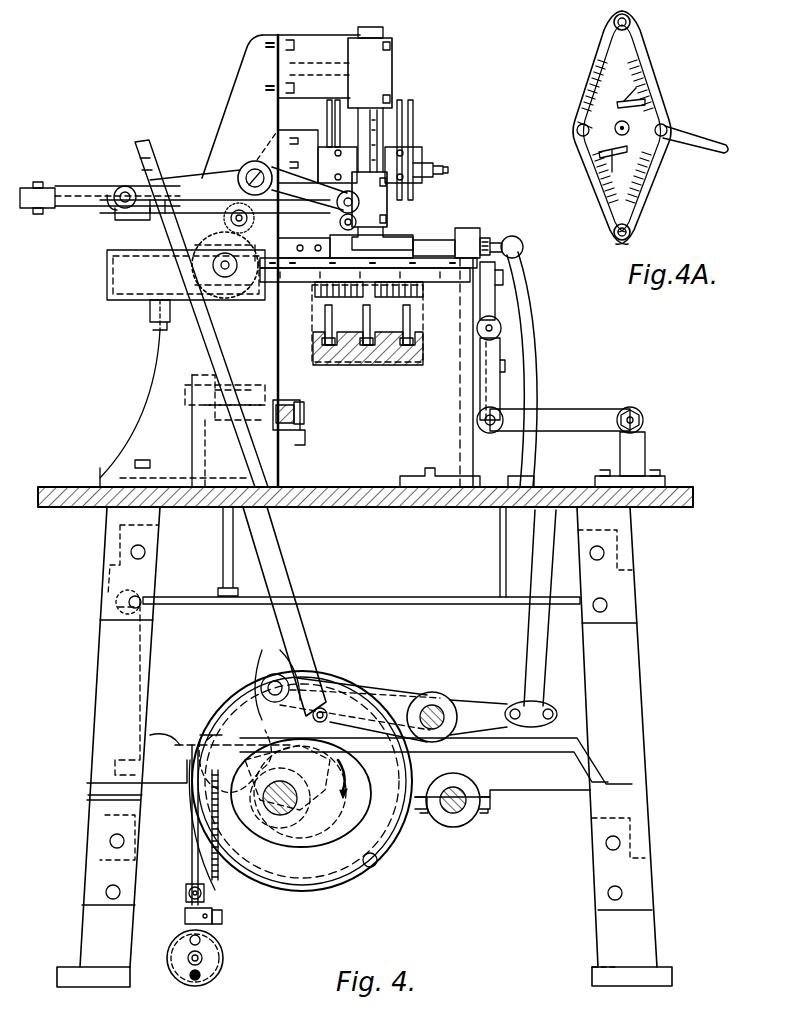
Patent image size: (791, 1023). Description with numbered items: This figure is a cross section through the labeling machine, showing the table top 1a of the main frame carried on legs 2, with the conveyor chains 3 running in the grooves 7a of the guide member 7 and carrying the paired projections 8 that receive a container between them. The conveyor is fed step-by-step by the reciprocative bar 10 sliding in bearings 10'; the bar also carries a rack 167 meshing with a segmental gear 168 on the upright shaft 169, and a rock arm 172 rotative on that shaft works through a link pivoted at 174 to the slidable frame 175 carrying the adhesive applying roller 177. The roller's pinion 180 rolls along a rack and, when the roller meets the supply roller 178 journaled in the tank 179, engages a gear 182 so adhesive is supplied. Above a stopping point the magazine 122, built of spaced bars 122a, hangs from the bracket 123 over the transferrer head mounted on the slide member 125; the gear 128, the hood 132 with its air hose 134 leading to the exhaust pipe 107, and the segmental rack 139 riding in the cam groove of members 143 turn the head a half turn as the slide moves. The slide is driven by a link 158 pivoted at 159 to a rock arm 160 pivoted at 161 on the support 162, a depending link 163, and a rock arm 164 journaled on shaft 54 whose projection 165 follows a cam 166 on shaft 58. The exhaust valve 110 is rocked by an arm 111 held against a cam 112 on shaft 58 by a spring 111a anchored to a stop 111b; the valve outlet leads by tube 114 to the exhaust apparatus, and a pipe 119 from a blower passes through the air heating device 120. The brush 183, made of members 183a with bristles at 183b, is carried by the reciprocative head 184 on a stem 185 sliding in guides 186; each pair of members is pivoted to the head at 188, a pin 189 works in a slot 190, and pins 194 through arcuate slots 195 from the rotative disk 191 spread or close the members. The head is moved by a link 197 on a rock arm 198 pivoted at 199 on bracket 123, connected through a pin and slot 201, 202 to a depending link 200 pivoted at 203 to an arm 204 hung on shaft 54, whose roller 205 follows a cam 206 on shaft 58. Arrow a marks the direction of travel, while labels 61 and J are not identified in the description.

In FIG. 4, the table top 1a is at (48, 487).
In FIG. 4, the legs 2 is at (95, 660).
In FIG. 4, the conveyor chains 3 is at (230, 261).
In FIG. 4, the guide member 7 is at (375, 362).
In FIG. 4, the grooves 7a is at (380, 330).
In FIG. 4, the projections 8 is at (362, 309).
In FIG. 4, the reciprocative bar 10 is at (311, 413).
In FIG. 4, the bearings 10' is at (308, 441).
In FIG. 4, the shaft 54 is at (445, 712).
In FIG. 4, the shaft 58 is at (292, 805).
In FIG. 4, the shaft bearing 61 is at (455, 815).
In FIG. 4, the pipe 107 is at (220, 560).
In FIG. 4, the rotative valve 110 is at (200, 735).
In FIG. 4, the arm 111 is at (213, 735).
In FIG. 4, the spring 111a is at (222, 900).
In FIG. 4, the stop 111b is at (224, 924).
In FIG. 4, the cam 112 is at (305, 760).
In FIG. 4, the tube 114 is at (186, 893).
In FIG. 4, the pipe 119 is at (190, 960).
In FIG. 4, the air heating device 120 is at (210, 978).
In FIG. 4, the magazine 122 is at (411, 138).
In FIG. 4, the bars 122a is at (400, 118).
In FIG. 4, the bracket 123 is at (215, 165).
In FIG. 4, the slide member 125 is at (467, 390).
In FIG. 4, the gear 128 is at (486, 236).
In FIG. 4, the hood 132 is at (507, 240).
In FIG. 4, the air hose 134 is at (523, 270).
In FIG. 4, the segmental rack 139 is at (522, 258).
In FIG. 4, the cam member 143 is at (497, 290).
In FIG. 4, the link 158 is at (492, 375).
In FIG. 4, the pivot 159 is at (501, 322).
In FIG. 4, the rock arm 160 is at (585, 420).
In FIG. 4, the pivot 161 is at (636, 415).
In FIG. 4, the support 162 is at (645, 445).
In FIG. 4, the depending link 163 is at (540, 636).
In FIG. 4, the rock arm 164 is at (503, 717).
In FIG. 4, the projection 165 is at (268, 674).
In FIG. 4, the cam 166 is at (292, 895).
In FIG. 4, the rack 167 is at (283, 398).
In FIG. 4, the segmental gear 168 is at (245, 402).
In FIG. 4, the upright shaft 169 is at (218, 335).
In FIG. 4, the rock arm 172 is at (138, 222).
In FIG. 4, the pivot 174 is at (73, 206).
In FIG. 4, the slidable frame 175 is at (88, 198).
In FIG. 4, the adhesive applying roller 177 is at (235, 205).
In FIG. 4, the supply roller 178 is at (170, 268).
In FIG. 4, the tank 179 is at (125, 310).
In FIG. 4, the pinion 180 is at (232, 210).
In FIG. 4, the gear 182 is at (205, 300).
In FIG. 4, the brush 183 is at (318, 286).
In FIG. 4, the brush members 183a is at (428, 284).
In FIG. 4A, the brush members 183a is at (606, 55).
In FIG. 4A, the bristles 183b is at (663, 158).
In FIG. 4, the reciprocative head 184 is at (465, 228).
In FIG. 4A, the reciprocative head 184 is at (620, 70).
In FIG. 4, the stem 185 is at (383, 118).
In FIG. 4, the guides 186 is at (390, 58).
In FIG. 4A, the pivot 188 is at (612, 22).
In FIG. 4A, the pin 189 is at (578, 124).
In FIG. 4A, the slot 190 is at (578, 136).
In FIG. 4, the disk 191 is at (392, 243).
In FIG. 4A, the disk 191 is at (690, 138).
In FIG. 4A, the pins 194 is at (648, 103).
In FIG. 4A, the arcuate slots 195 is at (640, 92).
In FIG. 4, the link 197 is at (345, 222).
In FIG. 4, the rock arm 198 is at (248, 188).
In FIG. 4, the pivot 199 is at (250, 170).
In FIG. 4, the link 200 is at (270, 547).
In FIG. 4, the pin 201 is at (122, 186).
In FIG. 4, the slot 202 is at (108, 185).
In FIG. 4, the pivot 203 is at (324, 707).
In FIG. 4, the arm 204 is at (404, 675).
In FIG. 4, the roller 205 is at (290, 648).
In FIG. 4, the cam 206 is at (370, 870).
In FIG. 4, the lever J is at (283, 181).
In FIG. 4, the arrow a is at (346, 778).